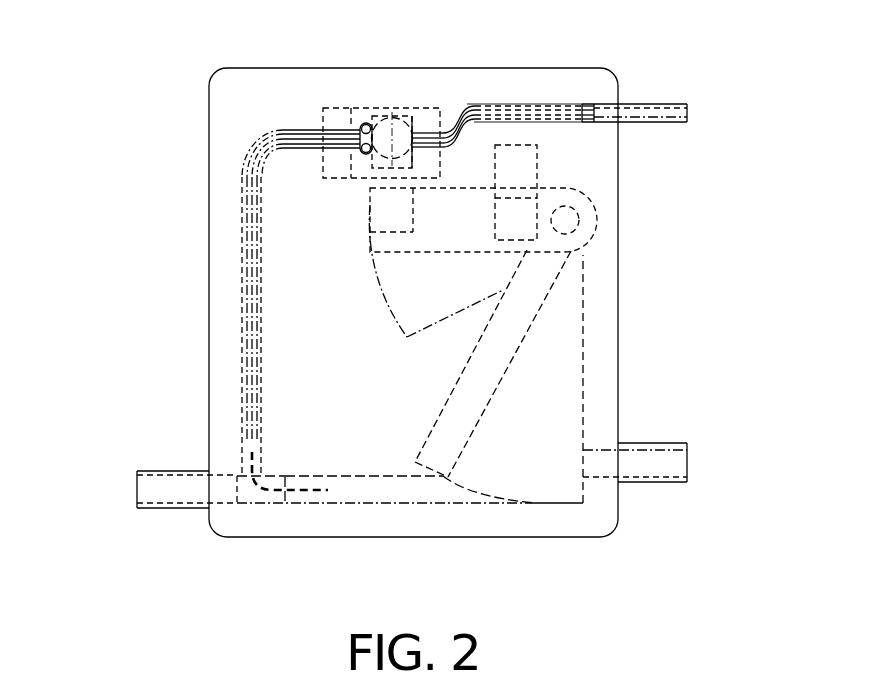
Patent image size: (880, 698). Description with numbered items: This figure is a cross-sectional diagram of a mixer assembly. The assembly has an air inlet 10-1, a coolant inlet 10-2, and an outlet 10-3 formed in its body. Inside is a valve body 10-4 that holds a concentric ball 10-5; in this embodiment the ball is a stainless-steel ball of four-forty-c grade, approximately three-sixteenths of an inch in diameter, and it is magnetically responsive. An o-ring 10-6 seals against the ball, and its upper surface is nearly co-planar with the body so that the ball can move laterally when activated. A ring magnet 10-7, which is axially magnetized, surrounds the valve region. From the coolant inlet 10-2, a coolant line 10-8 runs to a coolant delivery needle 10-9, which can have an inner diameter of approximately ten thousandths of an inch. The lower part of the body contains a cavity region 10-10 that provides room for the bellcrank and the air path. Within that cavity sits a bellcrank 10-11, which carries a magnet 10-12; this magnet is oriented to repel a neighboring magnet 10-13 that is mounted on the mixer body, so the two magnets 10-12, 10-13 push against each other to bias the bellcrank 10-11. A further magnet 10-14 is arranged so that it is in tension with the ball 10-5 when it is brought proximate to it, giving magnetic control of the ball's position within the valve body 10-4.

The air inlet 10-1 is at (667, 486).
The coolant inlet 10-2 is at (678, 134).
The outlet 10-3 is at (139, 517).
The valve body 10-4 is at (430, 89).
The concentric ball 10-5 is at (495, 89).
The o-ring 10-6 is at (363, 82).
The ring magnet 10-7 is at (326, 94).
The coolant line 10-8 is at (245, 302).
The coolant delivery needle 10-9 is at (386, 453).
The cavity region 10-10 is at (410, 424).
The bellcrank 10-11 is at (493, 363).
The magnet 10-12 is at (526, 237).
The magnet 10-13 is at (581, 142).
The magnet 10-14 is at (435, 237).